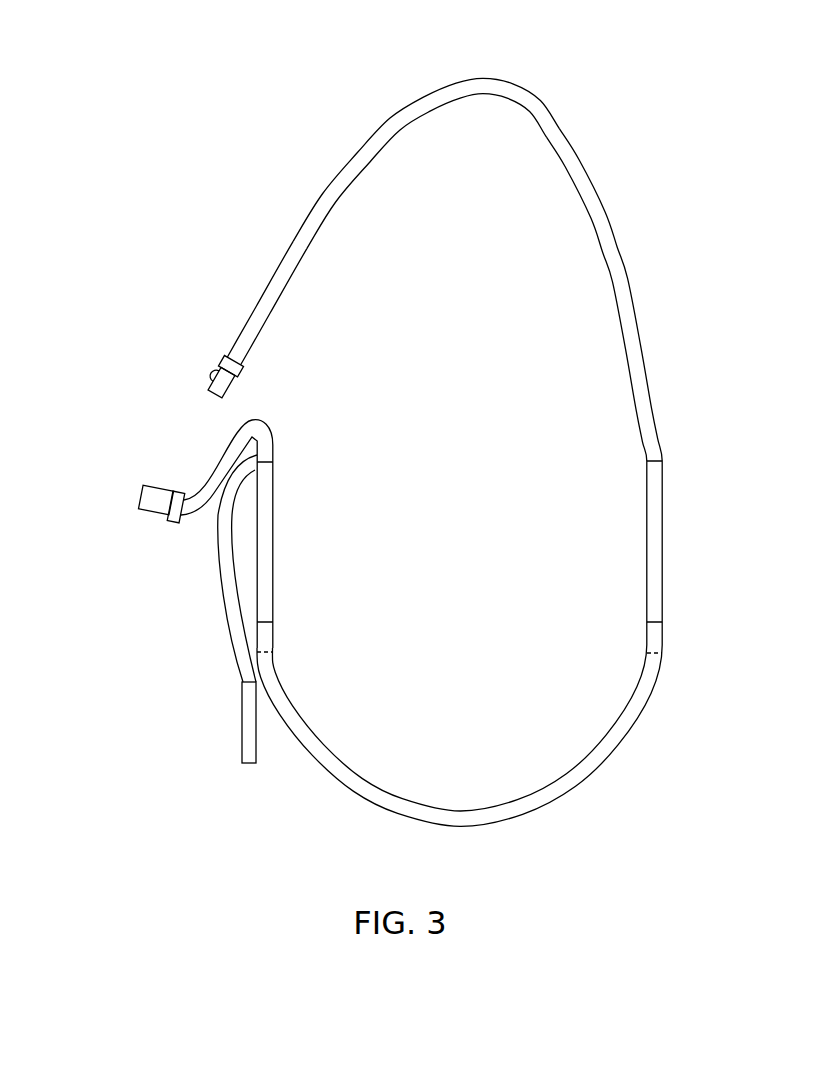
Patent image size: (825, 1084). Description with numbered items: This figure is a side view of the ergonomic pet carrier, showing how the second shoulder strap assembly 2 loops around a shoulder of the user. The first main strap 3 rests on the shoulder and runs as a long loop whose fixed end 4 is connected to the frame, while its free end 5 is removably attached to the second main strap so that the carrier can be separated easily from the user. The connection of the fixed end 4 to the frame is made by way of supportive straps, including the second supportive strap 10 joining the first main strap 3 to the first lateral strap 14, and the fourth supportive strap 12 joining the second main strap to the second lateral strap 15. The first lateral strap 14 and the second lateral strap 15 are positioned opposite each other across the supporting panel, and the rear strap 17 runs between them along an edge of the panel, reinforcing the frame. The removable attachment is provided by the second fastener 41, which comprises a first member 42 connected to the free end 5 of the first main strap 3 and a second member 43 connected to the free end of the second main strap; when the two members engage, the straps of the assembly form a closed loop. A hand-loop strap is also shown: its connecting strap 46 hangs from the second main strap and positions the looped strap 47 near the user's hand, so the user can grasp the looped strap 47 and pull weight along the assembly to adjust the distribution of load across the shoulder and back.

The second shoulder strap assembly 2 is at (625, 196).
The first main strap 3 is at (418, 106).
The fixed end 4 is at (673, 451).
The free end 5 is at (222, 340).
The second supportive strap 10 is at (655, 582).
The fourth supportive strap 12 is at (267, 560).
The first lateral strap 14 is at (658, 640).
The second lateral strap 15 is at (267, 638).
The rear strap 17 is at (642, 697).
The second fastener 41 is at (103, 515).
The first member 42 is at (208, 393).
The second member 43 is at (148, 515).
The connecting strap 46 is at (238, 632).
The looped strap 47 is at (248, 745).